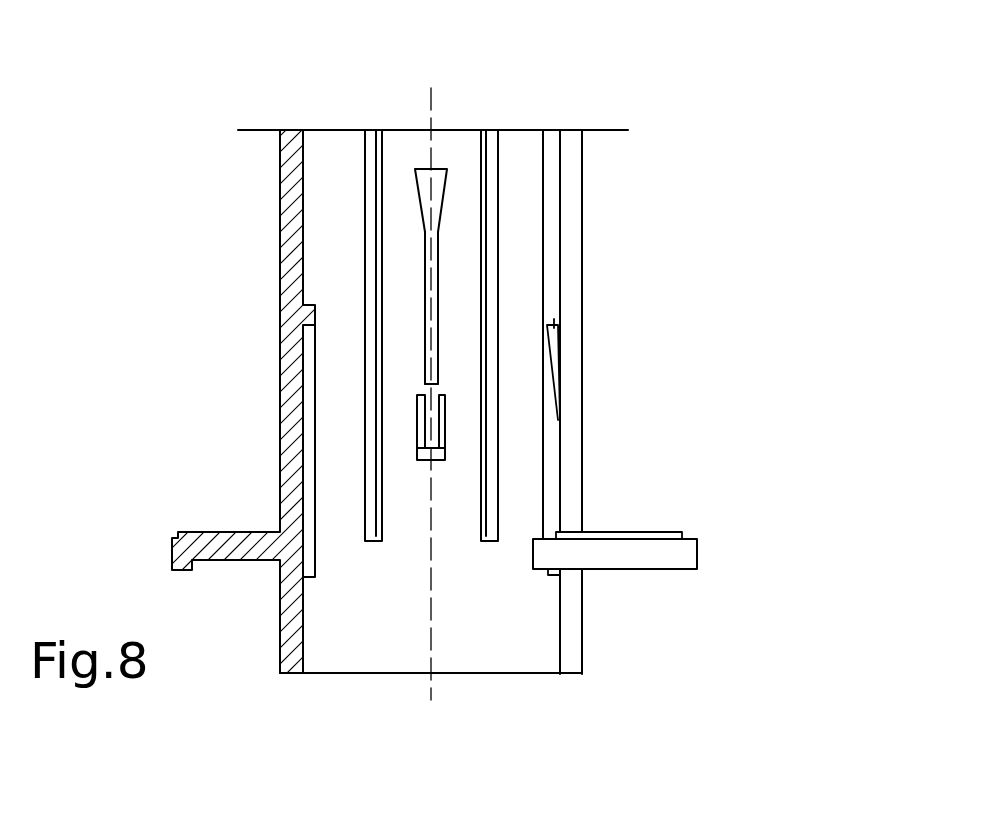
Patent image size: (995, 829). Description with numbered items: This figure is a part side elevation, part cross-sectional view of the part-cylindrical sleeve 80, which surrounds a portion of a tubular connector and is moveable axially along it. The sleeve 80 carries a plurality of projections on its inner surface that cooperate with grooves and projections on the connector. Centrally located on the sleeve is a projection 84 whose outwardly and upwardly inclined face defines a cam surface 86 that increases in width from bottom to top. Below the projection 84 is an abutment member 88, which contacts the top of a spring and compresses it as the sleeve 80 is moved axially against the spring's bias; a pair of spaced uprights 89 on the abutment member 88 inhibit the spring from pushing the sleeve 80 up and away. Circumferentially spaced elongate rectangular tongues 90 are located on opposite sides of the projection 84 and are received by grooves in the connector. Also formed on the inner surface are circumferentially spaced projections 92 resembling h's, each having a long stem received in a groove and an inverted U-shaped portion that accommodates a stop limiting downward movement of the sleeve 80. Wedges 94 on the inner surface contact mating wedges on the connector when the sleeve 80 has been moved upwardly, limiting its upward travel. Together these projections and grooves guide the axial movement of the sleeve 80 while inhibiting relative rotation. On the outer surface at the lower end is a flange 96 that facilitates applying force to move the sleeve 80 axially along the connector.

The part-cylindrical sleeve 80 is at (712, 210).
The projection 84 is at (408, 148).
The cam surface 86 is at (438, 182).
The abutment member 88 is at (436, 455).
The spaced uprights 89 is at (442, 403).
The elongate rectangular tongues 90 is at (370, 217).
The h-shaped projection 92 is at (307, 541).
The wedge 94 is at (553, 324).
The flange 96 is at (677, 548).